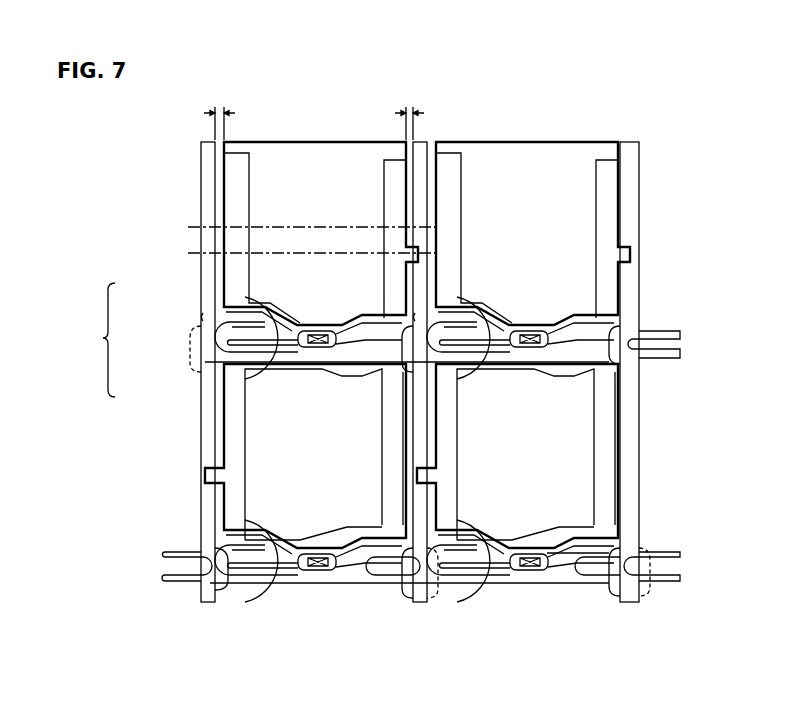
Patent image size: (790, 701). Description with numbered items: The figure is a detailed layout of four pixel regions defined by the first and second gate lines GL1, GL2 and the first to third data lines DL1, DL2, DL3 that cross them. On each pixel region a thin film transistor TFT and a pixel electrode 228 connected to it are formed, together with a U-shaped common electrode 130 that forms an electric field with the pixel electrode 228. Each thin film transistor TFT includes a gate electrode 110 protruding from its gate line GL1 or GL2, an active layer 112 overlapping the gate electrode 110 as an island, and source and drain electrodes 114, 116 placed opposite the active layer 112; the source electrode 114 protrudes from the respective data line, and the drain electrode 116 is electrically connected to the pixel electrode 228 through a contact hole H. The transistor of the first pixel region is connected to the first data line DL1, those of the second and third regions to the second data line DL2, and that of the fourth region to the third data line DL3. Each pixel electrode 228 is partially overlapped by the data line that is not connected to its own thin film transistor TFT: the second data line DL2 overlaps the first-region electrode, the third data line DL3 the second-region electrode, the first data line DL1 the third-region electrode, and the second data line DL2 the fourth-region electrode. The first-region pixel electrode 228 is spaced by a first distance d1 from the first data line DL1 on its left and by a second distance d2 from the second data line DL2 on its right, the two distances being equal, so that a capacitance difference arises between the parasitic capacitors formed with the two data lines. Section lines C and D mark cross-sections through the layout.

The pixel electrode 228 is at (317, 148).
The common electrode 130 is at (235, 196).
The gate electrode 110 is at (267, 330).
The active layer 112 is at (200, 321).
The source electrode 114 is at (190, 340).
The drain electrode 116 is at (213, 377).
The contact hole H is at (314, 333).
The first data line DL1 is at (207, 165).
The second data line DL2 is at (422, 141).
The third data line DL3 is at (631, 141).
The first gate line GL1 is at (575, 350).
The second gate line GL2 is at (497, 585).
The first distance d1 is at (219, 116).
The second distance d2 is at (409, 116).
The section line C-C' C is at (311, 228).
The section line D-D' D is at (312, 254).
The thin film transistor TFT is at (92, 340).